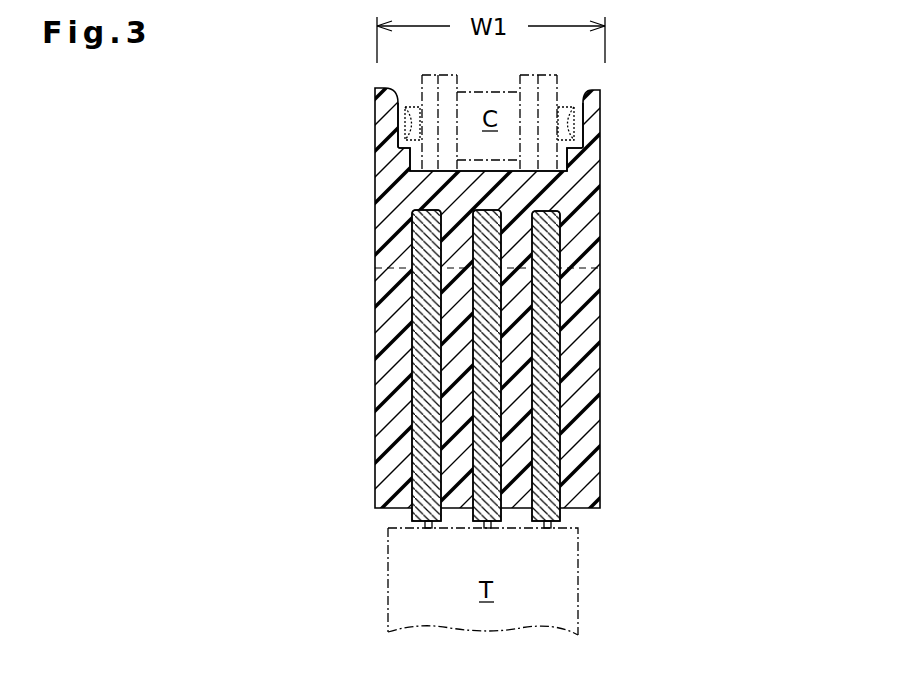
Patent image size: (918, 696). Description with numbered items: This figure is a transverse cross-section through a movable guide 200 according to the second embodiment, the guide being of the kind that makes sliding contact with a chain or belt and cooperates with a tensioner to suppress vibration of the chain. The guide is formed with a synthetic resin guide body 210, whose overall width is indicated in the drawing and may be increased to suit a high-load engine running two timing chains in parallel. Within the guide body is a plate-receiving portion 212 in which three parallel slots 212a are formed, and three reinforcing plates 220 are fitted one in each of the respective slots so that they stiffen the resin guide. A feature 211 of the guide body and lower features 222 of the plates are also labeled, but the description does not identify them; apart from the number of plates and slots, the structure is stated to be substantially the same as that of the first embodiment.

The movable guide 200 is at (360, 170).
The synthetic resin guide body 210 is at (725, 103).
The recess 211 is at (497, 171).
The plate-receiving portion 212 is at (586, 244).
The parallel slots 212a is at (440, 279).
The reinforcing plates 220 is at (413, 373).
The terminal end portions 222 is at (428, 528).